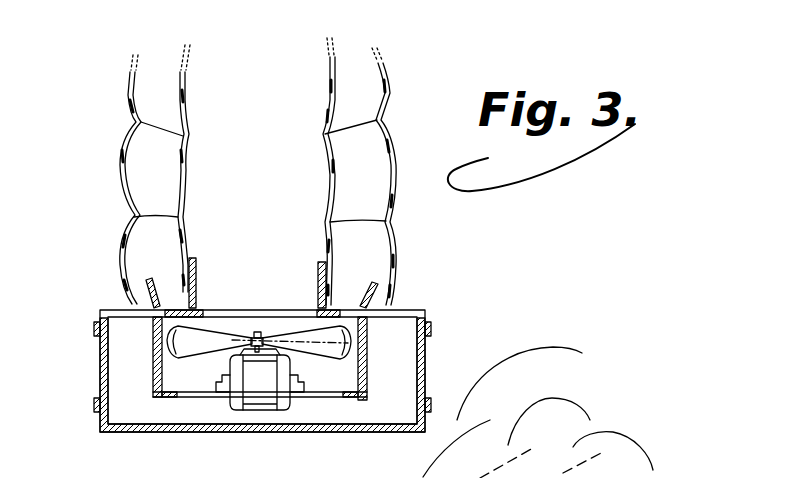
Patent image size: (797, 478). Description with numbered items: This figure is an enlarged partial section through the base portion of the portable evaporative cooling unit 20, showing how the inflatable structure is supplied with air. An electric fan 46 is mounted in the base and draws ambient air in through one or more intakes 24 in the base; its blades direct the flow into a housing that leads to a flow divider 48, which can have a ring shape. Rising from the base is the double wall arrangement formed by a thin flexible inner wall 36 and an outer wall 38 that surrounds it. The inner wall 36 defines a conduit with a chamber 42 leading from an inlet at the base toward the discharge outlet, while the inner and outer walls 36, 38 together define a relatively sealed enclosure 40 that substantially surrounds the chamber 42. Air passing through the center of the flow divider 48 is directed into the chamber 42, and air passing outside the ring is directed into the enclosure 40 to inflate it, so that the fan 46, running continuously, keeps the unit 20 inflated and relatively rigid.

The evaporative cooling unit 20 is at (108, 56).
The intake 24 is at (99, 352).
The inner wall 36 is at (331, 82).
The outer wall 38 is at (380, 78).
The enclosure 40 is at (370, 194).
The chamber 42 is at (262, 210).
The fan 46 is at (278, 374).
The flow divider 48 is at (197, 292).